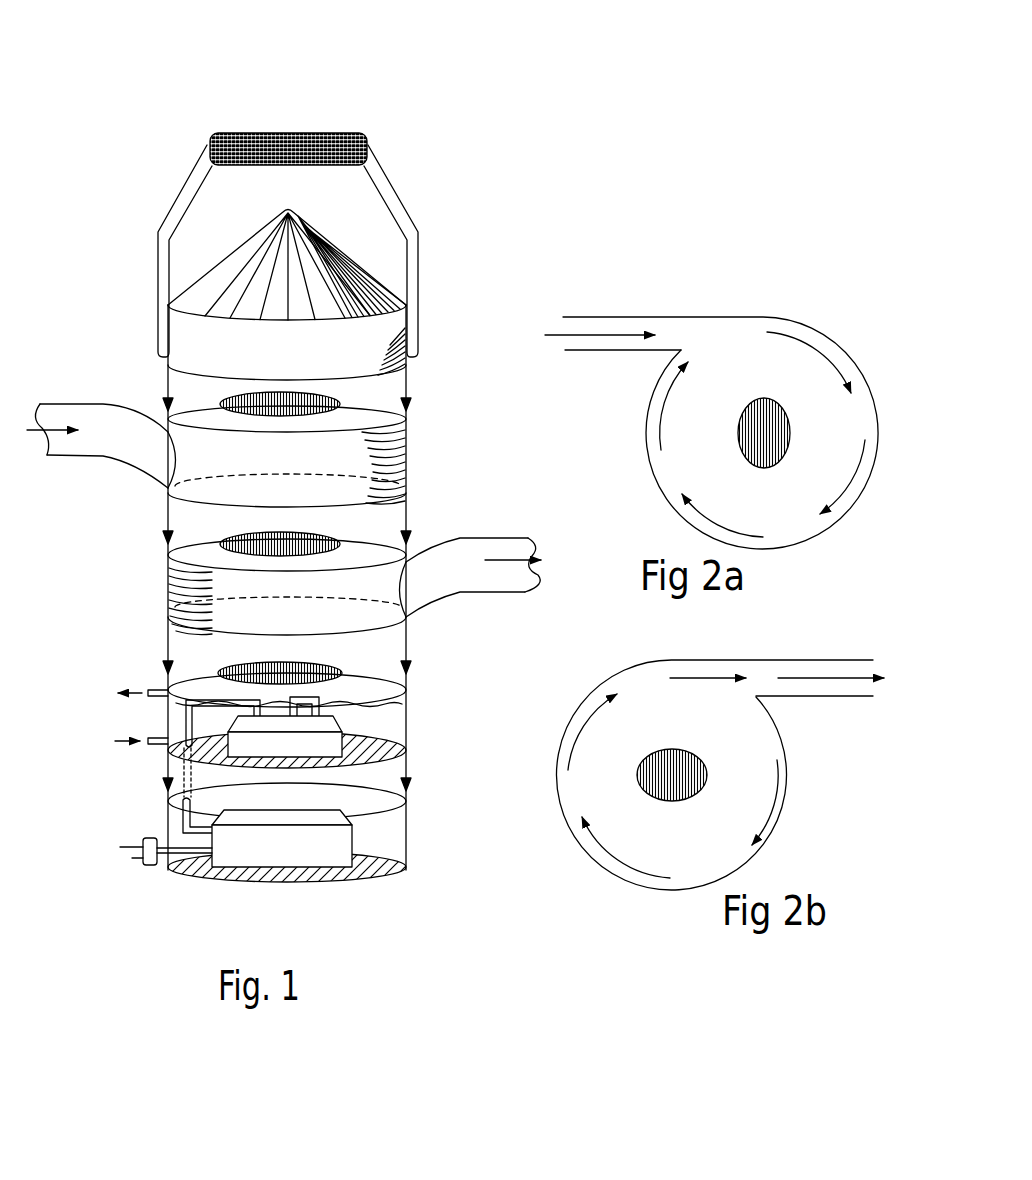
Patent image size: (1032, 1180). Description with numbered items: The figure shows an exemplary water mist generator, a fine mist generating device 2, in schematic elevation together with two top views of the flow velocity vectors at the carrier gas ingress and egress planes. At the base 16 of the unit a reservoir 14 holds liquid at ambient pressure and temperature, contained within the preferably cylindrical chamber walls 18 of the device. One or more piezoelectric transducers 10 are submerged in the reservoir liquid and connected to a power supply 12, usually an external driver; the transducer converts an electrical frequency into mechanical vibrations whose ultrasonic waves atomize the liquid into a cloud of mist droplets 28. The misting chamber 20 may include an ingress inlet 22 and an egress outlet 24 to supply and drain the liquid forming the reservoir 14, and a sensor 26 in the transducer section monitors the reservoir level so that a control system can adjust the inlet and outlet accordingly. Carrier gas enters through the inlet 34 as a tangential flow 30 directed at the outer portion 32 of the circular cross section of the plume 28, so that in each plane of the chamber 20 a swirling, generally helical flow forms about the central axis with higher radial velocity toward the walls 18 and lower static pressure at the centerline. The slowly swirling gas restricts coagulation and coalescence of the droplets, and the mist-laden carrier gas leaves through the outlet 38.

In FIG. 1, the fine mist generating device 2 is at (412, 75).
In FIG. 1, the piezoelectric transducer 10 is at (345, 736).
In FIG. 1, the power supply 12 is at (310, 862).
In FIG. 1, the reservoir 14 is at (390, 716).
In FIG. 1, the base 16 is at (380, 628).
In FIG. 1, the chamber walls 18 is at (168, 725).
In FIG. 1, the misting chamber 20 is at (432, 403).
In FIG. 2A, the misting chamber 20 is at (805, 314).
In FIG. 2B, the misting chamber 20 is at (798, 766).
In FIG. 1, the ingress inlet 22 is at (160, 745).
In FIG. 1, the egress outlet 24 is at (163, 690).
In FIG. 1, the sensor 26 is at (313, 700).
In FIG. 2A, the mist droplets 28 is at (778, 402).
In FIG. 2B, the mist droplets 28 is at (678, 750).
In FIG. 2A, the tangential flow 30 is at (715, 520).
In FIG. 2B, the tangential flow 30 is at (612, 858).
In FIG. 2A, the outer portion 32 is at (726, 441).
In FIG. 2B, the outer portion 32 is at (619, 779).
In FIG. 1, the inlet 34 is at (92, 455).
In FIG. 2A, the inlet 34 is at (635, 352).
In FIG. 1, the outlet 38 is at (483, 538).
In FIG. 2B, the outlet 38 is at (775, 660).